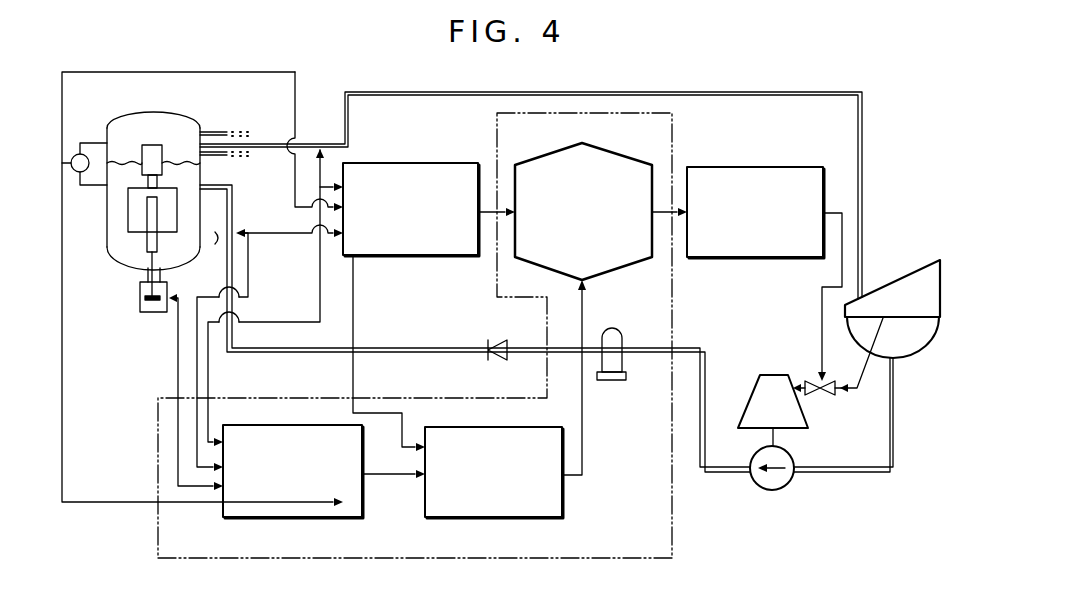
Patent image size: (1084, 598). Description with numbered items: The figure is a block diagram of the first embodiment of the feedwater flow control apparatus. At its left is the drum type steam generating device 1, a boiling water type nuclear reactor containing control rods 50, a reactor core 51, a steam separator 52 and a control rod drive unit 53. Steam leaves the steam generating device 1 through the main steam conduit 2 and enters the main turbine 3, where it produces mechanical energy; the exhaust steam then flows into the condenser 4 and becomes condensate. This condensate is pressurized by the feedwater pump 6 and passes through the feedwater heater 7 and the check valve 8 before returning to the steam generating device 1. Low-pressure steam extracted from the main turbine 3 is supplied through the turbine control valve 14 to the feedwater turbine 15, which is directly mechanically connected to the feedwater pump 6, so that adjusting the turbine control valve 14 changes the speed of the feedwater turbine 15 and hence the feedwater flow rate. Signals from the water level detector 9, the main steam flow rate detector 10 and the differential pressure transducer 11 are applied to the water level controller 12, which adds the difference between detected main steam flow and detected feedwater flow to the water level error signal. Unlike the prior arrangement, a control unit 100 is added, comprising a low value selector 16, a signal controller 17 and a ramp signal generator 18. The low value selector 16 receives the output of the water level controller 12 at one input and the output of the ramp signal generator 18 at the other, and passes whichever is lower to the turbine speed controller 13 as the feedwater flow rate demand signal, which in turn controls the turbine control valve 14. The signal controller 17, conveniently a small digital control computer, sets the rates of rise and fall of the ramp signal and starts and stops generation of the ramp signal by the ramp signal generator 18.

The drum type steam generating device 1 is at (120, 265).
The main steam conduit 2 is at (686, 92).
The main turbine 3 is at (886, 294).
The condenser 4 is at (917, 355).
The feedwater pump 6 is at (772, 490).
The feedwater heater 7 is at (618, 332).
The check valve 8 is at (504, 357).
The water level detector 9 is at (75, 173).
The main steam flow rate detector 10 is at (318, 136).
The differential pressure transducer 11 is at (239, 233).
The water level controller 12 is at (410, 257).
The turbine speed controller 13 is at (732, 167).
The turbine control valve 14 is at (823, 395).
The feedwater turbine 15 is at (748, 397).
The low value selector 16 is at (627, 157).
The signal controller 17 is at (362, 495).
The ramp signal generator 18 is at (557, 514).
The control rods 50 is at (146, 245).
The reactor core 51 is at (128, 228).
The steam separator 52 is at (160, 145).
The control rod drive unit 53 is at (148, 312).
The control unit 100 is at (672, 497).